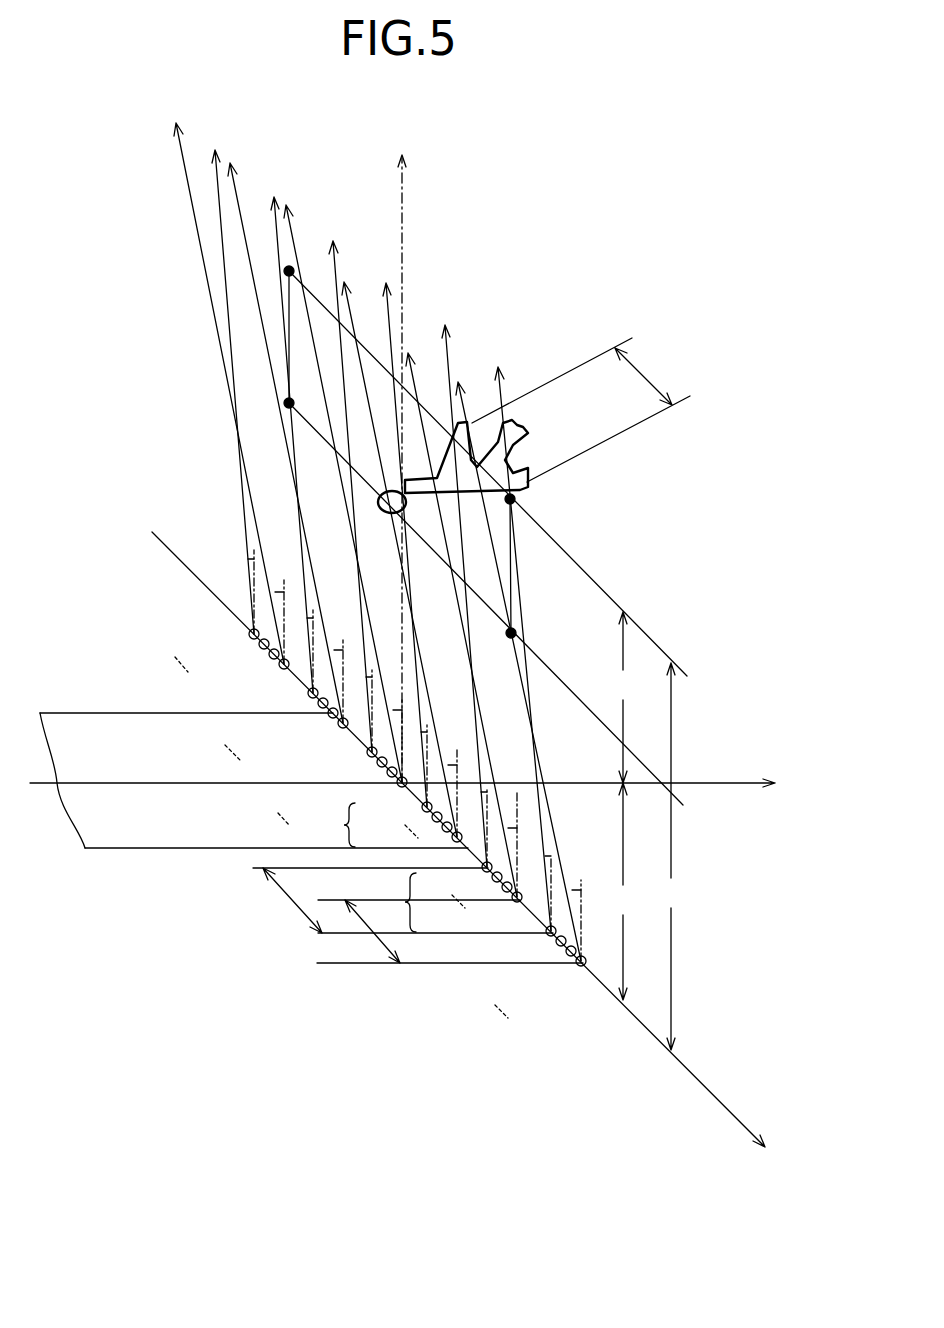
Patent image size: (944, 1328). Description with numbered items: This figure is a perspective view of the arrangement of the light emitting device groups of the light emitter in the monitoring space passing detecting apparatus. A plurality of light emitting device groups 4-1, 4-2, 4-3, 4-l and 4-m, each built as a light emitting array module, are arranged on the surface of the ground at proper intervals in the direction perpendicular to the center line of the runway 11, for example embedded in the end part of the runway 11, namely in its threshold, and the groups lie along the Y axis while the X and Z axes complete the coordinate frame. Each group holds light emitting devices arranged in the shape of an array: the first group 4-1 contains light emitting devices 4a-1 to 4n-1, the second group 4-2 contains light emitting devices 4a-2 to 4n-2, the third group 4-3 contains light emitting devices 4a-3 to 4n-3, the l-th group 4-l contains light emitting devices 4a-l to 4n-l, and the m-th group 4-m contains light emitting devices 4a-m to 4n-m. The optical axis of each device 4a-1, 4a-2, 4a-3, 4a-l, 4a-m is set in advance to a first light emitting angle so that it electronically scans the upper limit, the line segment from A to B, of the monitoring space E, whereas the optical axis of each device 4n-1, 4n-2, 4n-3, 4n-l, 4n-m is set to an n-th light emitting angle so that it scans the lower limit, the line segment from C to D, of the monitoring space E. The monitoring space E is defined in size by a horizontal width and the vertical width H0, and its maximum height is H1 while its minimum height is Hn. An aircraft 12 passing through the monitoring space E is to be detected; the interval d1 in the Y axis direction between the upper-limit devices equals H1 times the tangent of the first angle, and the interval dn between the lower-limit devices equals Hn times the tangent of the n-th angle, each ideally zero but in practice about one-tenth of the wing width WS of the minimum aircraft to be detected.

The light emitting device group 4-m is at (138, 632).
The light emitting device 4a-m is at (252, 630).
The light emitting device 4n-m is at (283, 666).
The light emitting device group 4-l is at (219, 803).
The light emitting device 4a-l is at (371, 753).
The light emitting device 4n-l is at (400, 784).
The light emitting device group 4-3 is at (330, 848).
The light emitting device 4a-3 is at (425, 806).
The light emitting device 4n-3 is at (455, 838).
The light emitting device group 4-2 is at (405, 933).
The light emitting device 4a-2 is at (489, 869).
The light emitting device 4n-2 is at (518, 899).
The light emitting device group 4-1 is at (467, 975).
The light emitting device 4a-1 is at (550, 934).
The light emitting device 4n-1 is at (580, 964).
The runway 11 is at (113, 848).
The human body (detected object) 12 is at (535, 424).
The interval d1 is at (300, 913).
The interval dn is at (365, 913).
The vertical width H0 is at (623, 697).
The minimum height Hn is at (623, 891).
The maximum height H1 is at (671, 856).
The wing width WS is at (581, 410).
The monitoring space E is at (500, 543).
The point A is at (417, 392).
The point B is at (485, 465).
The point C is at (483, 596).
The point D is at (500, 644).
The X axis X is at (416, 783).
The Y-axis Y is at (468, 857).
The Z axis Z is at (400, 454).